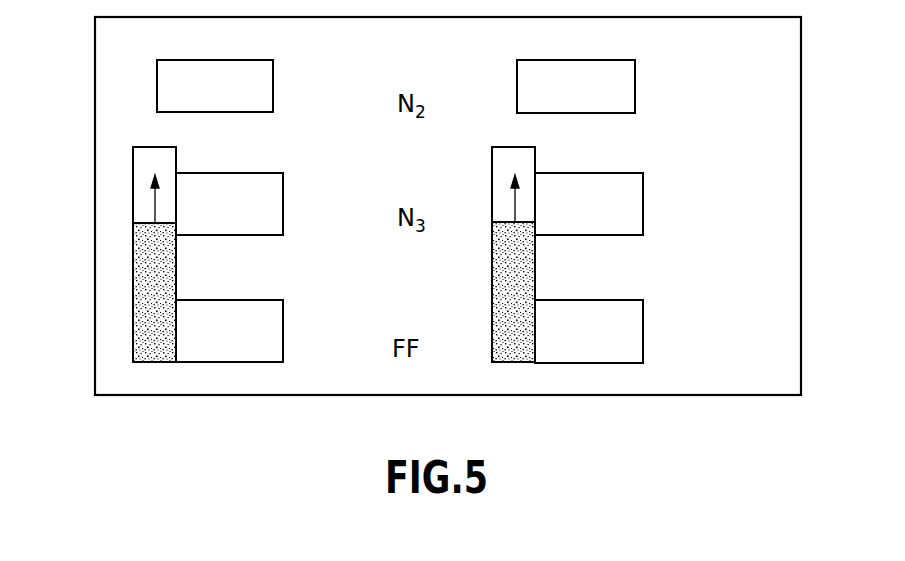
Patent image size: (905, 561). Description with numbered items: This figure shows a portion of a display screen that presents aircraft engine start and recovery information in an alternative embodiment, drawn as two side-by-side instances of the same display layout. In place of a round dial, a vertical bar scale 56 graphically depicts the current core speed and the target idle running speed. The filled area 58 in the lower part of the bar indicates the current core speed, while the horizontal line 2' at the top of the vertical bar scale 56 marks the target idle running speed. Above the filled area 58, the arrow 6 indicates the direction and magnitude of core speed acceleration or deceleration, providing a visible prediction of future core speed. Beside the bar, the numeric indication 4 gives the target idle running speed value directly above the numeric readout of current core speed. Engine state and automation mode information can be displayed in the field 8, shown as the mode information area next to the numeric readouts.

The horizontal line 2' is at (322, 231).
The numeric indication 4 is at (262, 153).
The arrow 6 is at (155, 210).
The field 8 is at (314, 281).
The vertical bar scale 56 is at (287, 231).
The filled area 58 is at (155, 257).